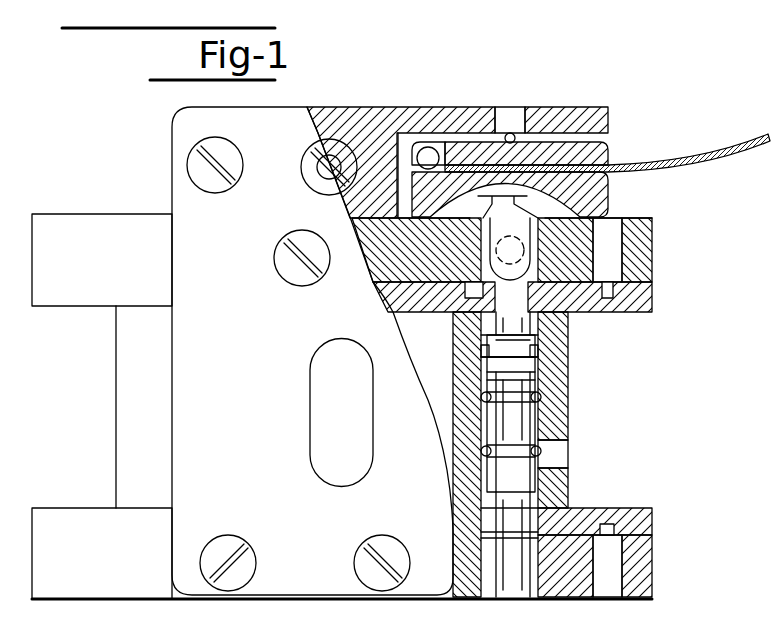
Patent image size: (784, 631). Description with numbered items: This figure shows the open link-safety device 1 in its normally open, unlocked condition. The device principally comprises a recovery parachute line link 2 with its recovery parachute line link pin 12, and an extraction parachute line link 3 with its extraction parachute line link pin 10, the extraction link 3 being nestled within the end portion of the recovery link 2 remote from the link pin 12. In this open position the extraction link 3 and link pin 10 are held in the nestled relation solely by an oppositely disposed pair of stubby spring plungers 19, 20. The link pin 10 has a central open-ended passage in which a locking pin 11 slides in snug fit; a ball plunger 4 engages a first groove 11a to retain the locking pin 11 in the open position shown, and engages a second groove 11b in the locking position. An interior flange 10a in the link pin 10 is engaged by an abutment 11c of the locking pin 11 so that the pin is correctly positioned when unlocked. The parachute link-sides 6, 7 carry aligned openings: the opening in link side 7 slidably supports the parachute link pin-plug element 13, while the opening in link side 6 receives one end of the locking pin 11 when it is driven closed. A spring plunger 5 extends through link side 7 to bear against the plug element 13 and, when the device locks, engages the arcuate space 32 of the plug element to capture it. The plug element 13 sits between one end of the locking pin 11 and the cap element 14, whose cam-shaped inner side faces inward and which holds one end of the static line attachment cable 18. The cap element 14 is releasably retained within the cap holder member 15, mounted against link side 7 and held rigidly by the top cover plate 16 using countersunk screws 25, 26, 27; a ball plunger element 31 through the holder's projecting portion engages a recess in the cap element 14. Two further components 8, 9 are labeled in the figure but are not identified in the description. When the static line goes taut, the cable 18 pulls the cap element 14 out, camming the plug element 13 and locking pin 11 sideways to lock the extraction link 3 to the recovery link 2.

The open link-safety device 1 is at (100, 356).
The recovery parachute line link 2 is at (92, 214).
The extraction parachute line link 3 is at (588, 502).
The ball plunger 4 is at (560, 450).
The spring plunger 5 is at (470, 251).
The parachute link-side 6 is at (655, 581).
The parachute link-side 7 is at (655, 272).
The plate 8 is at (653, 295).
The block 9 is at (654, 514).
The extraction parachute line link pin 10 is at (568, 400).
The interior flange 10a is at (538, 346).
The locking pin 11 is at (525, 424).
The first groove 11a is at (505, 456).
The second groove 11b is at (500, 395).
The abutment 11c is at (505, 347).
The recovery parachute line link pin 12 is at (128, 438).
The parachute link pin-plug element 13 is at (615, 230).
The cap element 14 is at (610, 178).
The cap holder member 15 is at (405, 108).
The top cover plate 16 is at (229, 397).
The static line attachment cable 18 is at (704, 148).
The spring plunger 19 is at (605, 555).
The spring plunger 20 is at (615, 243).
The countersunk screw 25 is at (213, 193).
The countersunk screw 26 is at (282, 287).
The countersunk screw 27 is at (235, 536).
The ball plunger element 31 is at (505, 113).
The arcuate space 32 is at (558, 209).